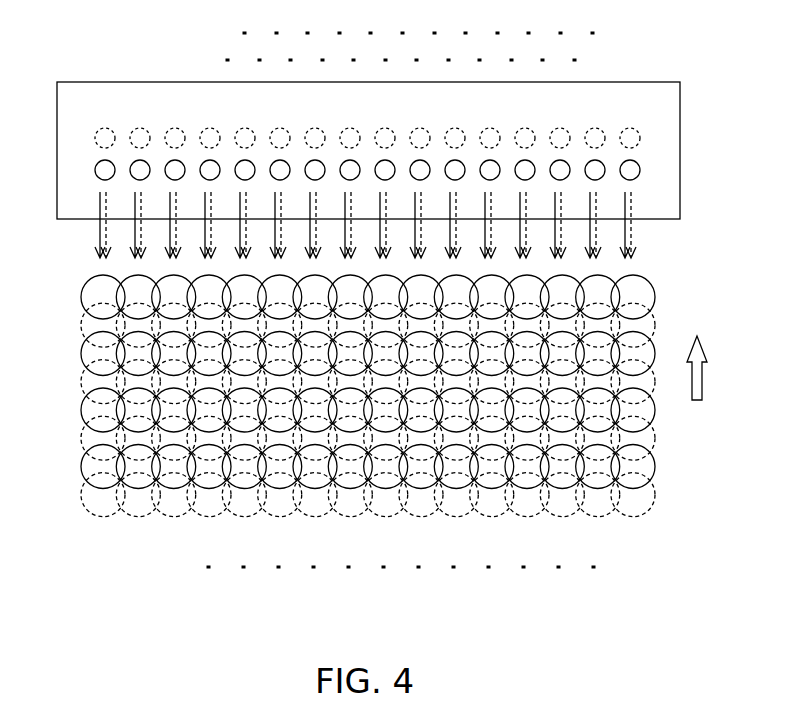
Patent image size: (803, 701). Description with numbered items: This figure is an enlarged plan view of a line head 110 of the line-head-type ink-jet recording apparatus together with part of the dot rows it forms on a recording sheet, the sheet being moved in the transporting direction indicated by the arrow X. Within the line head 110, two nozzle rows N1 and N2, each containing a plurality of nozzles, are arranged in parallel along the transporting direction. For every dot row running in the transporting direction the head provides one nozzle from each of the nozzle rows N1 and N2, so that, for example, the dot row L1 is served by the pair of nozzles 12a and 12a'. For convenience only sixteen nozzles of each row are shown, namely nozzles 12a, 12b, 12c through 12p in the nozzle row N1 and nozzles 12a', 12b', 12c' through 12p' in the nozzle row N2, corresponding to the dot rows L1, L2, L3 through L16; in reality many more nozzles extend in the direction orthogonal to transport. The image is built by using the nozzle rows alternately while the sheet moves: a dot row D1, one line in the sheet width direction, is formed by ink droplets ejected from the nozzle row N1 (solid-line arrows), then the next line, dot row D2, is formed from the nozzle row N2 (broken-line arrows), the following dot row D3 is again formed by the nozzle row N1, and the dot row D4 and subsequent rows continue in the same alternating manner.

The recording head 110 is at (668, 185).
The nozzle 12a is at (86, 117).
The nozzle 12b is at (133, 117).
The nozzle 12c is at (179, 117).
The nozzle 12p is at (616, 117).
The nozzle 12a' is at (102, 86).
The nozzle 12b' is at (154, 86).
The nozzle 12c' is at (194, 86).
The nozzle 12p' is at (632, 86).
The nozzle row N1 is at (65, 174).
The nozzle row N2 is at (65, 142).
The dot row D1 is at (65, 301).
The dot row D2 is at (65, 329).
The dot row D3 is at (65, 358).
The dot row D4 is at (65, 386).
The dot row L1 is at (107, 536).
The dot row L2 is at (138, 527).
The dot row L3 is at (177, 536).
The dot row L16 is at (637, 536).
The transporting direction X is at (697, 360).